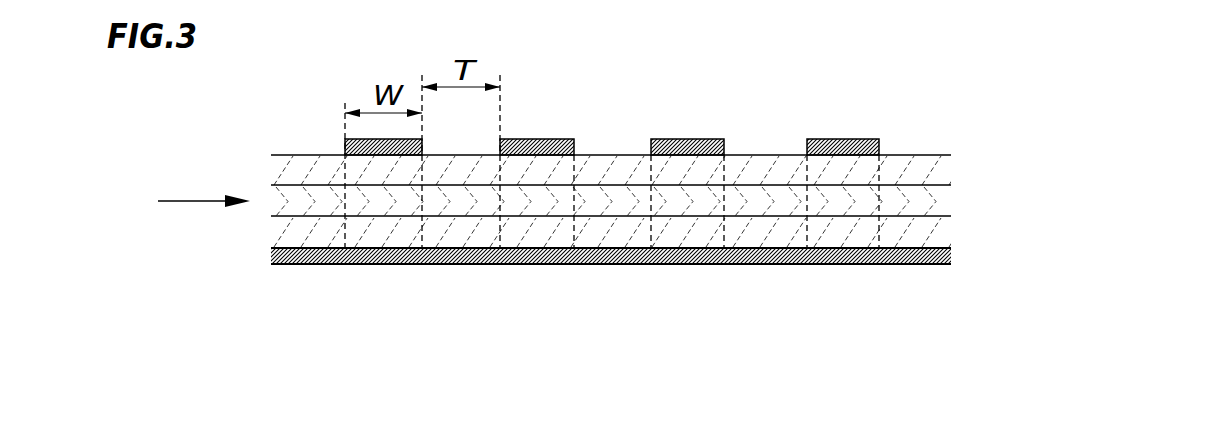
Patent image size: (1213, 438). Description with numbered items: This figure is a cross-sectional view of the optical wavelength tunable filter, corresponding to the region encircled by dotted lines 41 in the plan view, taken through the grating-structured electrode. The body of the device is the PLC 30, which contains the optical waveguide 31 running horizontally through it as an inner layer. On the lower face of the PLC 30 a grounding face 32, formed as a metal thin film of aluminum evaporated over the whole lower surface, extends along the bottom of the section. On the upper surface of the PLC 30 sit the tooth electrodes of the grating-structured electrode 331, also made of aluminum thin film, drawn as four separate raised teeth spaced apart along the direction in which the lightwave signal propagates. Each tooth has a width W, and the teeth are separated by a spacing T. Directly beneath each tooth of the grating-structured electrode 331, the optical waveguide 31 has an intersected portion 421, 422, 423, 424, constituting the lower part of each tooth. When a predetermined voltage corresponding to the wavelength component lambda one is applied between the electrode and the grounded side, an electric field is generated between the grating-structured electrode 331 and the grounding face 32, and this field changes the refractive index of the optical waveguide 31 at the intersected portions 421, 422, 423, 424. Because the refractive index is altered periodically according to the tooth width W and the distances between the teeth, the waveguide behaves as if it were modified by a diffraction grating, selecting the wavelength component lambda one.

The PLC 30 is at (952, 168).
The optical waveguide 31 is at (952, 201).
The grounding face 32 is at (952, 258).
The grating-structured electrode 331 is at (345, 150).
The portion encircled by dotted lines 41 is at (184, 200).
The intersected portion 421 is at (355, 197).
The intersected portion 422 is at (538, 208).
The intersected portion 423 is at (715, 197).
The intersected portion 424 is at (832, 195).